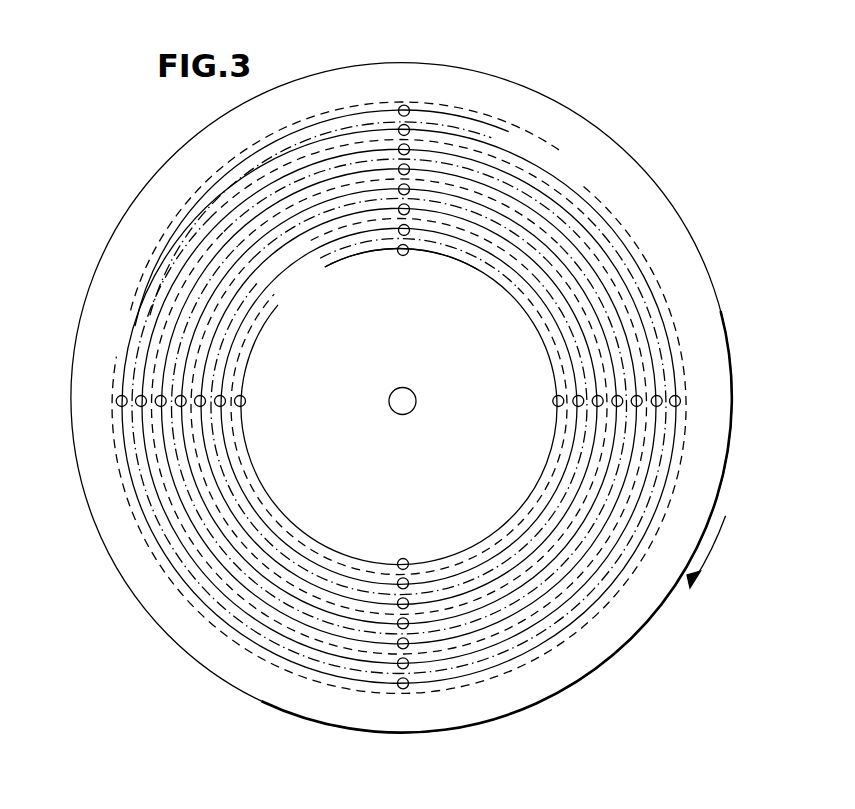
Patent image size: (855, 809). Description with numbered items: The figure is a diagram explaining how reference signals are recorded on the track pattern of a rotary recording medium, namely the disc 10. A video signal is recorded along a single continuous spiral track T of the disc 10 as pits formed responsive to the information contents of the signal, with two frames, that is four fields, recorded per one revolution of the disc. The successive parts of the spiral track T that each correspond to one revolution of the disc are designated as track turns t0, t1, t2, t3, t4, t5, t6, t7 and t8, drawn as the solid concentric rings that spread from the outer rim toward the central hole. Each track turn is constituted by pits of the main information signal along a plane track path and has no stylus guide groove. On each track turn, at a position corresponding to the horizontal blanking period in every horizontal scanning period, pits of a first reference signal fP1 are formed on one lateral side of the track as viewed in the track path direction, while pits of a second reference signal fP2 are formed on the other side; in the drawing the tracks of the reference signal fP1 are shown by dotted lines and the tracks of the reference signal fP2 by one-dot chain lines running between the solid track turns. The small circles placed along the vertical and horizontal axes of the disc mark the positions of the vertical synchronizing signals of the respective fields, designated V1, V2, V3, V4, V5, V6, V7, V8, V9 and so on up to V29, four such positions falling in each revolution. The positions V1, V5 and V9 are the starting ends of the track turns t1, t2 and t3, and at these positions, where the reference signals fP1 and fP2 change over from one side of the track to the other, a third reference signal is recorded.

The disc 10 is at (717, 283).
The spiral track T is at (217, 178).
The first reference signal fP1 is at (137, 277).
The second reference signal fP2 is at (140, 307).
The track turn t0 is at (490, 123).
The track turn t1 is at (552, 173).
The track turn t2 is at (577, 220).
The track turn t3 is at (587, 258).
The track turn t4 is at (560, 267).
The track turn t5 is at (522, 257).
The track turn t6 is at (490, 255).
The track turn t7 is at (447, 257).
The track turn t8 is at (358, 262).
The vertical synchronizing signal position V1 is at (410, 107).
The vertical synchronizing signal position V2 is at (116, 401).
The vertical synchronizing signal position V3 is at (398, 682).
The vertical synchronizing signal position V4 is at (681, 401).
The vertical synchronizing signal position V5 is at (410, 130).
The vertical synchronizing signal position V6 is at (138, 406).
The vertical synchronizing signal position V7 is at (398, 662).
The vertical synchronizing signal position V8 is at (660, 406).
The vertical synchronizing signal position V9 is at (410, 148).
The vertical synchronizing signal position V29 is at (404, 256).